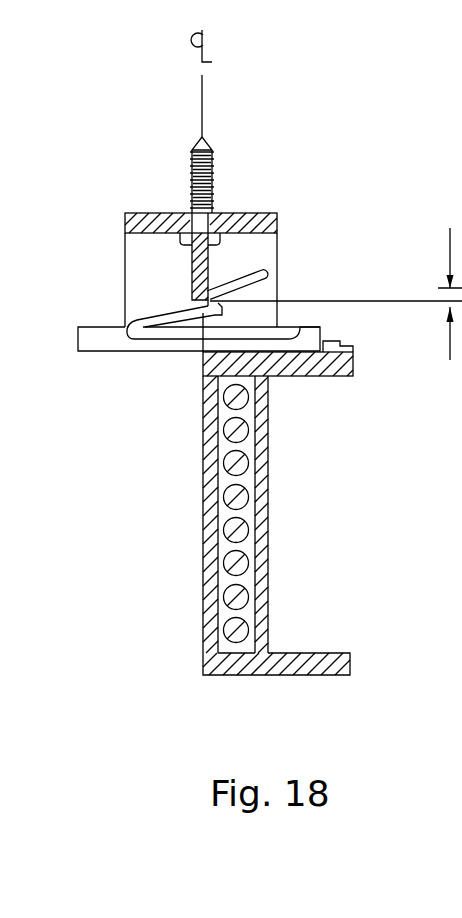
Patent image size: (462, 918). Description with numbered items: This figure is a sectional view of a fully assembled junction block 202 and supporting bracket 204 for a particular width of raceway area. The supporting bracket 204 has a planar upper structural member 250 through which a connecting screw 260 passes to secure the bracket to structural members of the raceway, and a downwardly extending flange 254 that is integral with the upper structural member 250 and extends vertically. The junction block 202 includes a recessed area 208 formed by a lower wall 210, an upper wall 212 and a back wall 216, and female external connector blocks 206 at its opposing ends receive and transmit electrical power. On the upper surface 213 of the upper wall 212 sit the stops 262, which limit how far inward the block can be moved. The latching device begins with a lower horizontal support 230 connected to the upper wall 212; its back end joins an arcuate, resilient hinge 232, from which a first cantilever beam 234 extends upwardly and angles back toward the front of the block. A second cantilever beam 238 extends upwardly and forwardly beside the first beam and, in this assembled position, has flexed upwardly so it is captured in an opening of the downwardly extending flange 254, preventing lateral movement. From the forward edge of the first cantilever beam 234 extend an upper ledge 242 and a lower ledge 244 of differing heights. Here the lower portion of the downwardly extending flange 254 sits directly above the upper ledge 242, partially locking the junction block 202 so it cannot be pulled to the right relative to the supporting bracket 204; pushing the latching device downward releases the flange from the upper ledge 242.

The junction block 202 is at (306, 545).
The supporting bracket 204 is at (163, 196).
The female external connector blocks 206 is at (318, 316).
The recessed area 208 is at (297, 470).
The lower wall 210 is at (337, 653).
The upper wall 212 is at (328, 367).
The upper surface 213 is at (325, 336).
The back wall 216 is at (263, 605).
The lower horizontal support 230 is at (163, 352).
The hinge 232 is at (110, 343).
The first cantilever beam 234 is at (137, 308).
The second cantilever beam 238 is at (212, 262).
The upper ledge 242 is at (185, 298).
The lower ledge 244 is at (266, 279).
The upper structural member 250 is at (256, 213).
The downwardly extending flange 254 is at (222, 242).
The connecting screws 260 is at (210, 176).
The stops 262 is at (345, 352).